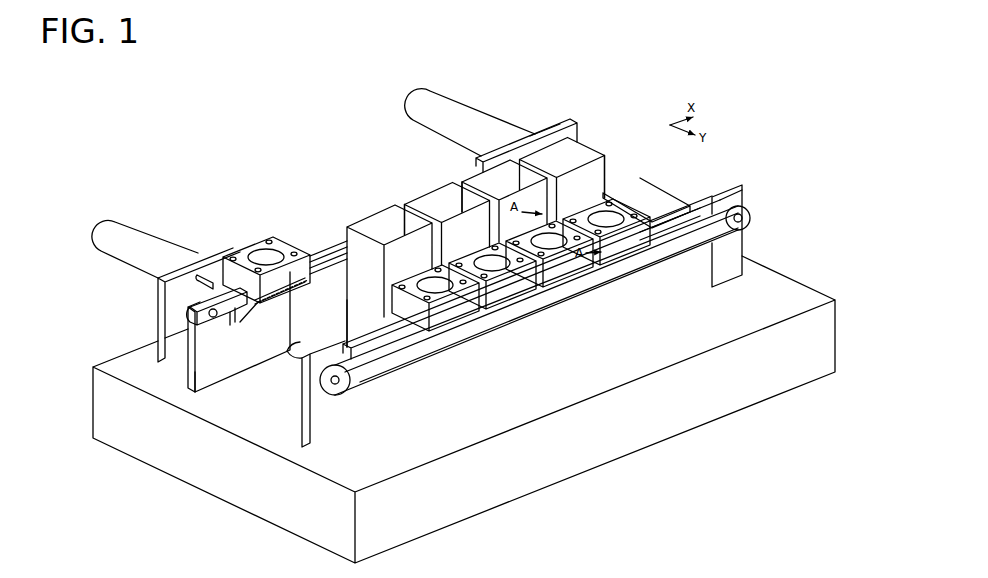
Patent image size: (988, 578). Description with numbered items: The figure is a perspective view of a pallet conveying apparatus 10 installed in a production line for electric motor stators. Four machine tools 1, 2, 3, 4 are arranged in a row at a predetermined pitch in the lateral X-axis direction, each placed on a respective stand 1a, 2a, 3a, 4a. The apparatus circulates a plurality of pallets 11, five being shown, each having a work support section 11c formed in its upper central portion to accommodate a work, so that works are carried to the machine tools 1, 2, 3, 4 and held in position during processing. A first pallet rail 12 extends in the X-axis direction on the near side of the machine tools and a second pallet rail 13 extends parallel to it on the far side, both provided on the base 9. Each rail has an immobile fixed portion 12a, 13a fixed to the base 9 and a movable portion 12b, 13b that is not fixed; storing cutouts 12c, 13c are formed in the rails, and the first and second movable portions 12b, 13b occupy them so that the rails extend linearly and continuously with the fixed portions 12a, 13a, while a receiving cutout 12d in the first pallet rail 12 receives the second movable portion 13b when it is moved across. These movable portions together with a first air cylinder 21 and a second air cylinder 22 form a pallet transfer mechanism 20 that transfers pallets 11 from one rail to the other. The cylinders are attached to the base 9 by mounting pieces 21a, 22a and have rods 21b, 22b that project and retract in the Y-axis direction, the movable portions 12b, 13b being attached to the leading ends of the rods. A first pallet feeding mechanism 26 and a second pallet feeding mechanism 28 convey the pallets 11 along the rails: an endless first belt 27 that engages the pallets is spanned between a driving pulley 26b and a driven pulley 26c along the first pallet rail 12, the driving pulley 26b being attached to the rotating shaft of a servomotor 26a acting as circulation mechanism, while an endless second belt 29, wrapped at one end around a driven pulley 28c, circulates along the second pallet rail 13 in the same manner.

The base 9 is at (758, 372).
The pallet conveying apparatus 10 is at (661, 107).
The pallet 11 is at (250, 240).
The work support section 11c is at (270, 252).
The first pallet rail 12 is at (748, 249).
The fixed portion 12a is at (710, 268).
The first movable portion 12b is at (746, 258).
The storing cutout 12c is at (700, 262).
The receiving cutout 12d is at (397, 360).
The second pallet rail 13 is at (188, 377).
The fixed portion 13a is at (205, 372).
The second movable portion 13b is at (250, 300).
The storing cutout 13c is at (280, 307).
The machine tool 1 is at (392, 234).
The stand 1a is at (370, 218).
The machine tool 2 is at (450, 212).
The stand 2a is at (412, 197).
The machine tool 3 is at (505, 185).
The stand 3a is at (462, 182).
The machine tool 4 is at (560, 160).
The stand 4a is at (608, 160).
The pallet transfer mechanism 20 is at (553, 115).
The first air cylinder 21 is at (483, 127).
The mounting piece 21a is at (539, 132).
The rod 21b is at (625, 190).
The second air cylinder 22 is at (128, 232).
The mounting piece 22a is at (185, 263).
The rod 22b is at (210, 280).
The first pallet feeding mechanism 26 is at (760, 201).
The servomotor 26a is at (292, 363).
The driving pulley 26b is at (339, 396).
The driven pulley 26c is at (750, 218).
The first belt 27 is at (440, 350).
The second pallet feeding mechanism 28 is at (188, 300).
The driven pulley 28c is at (197, 324).
The second belt 29 is at (330, 236).